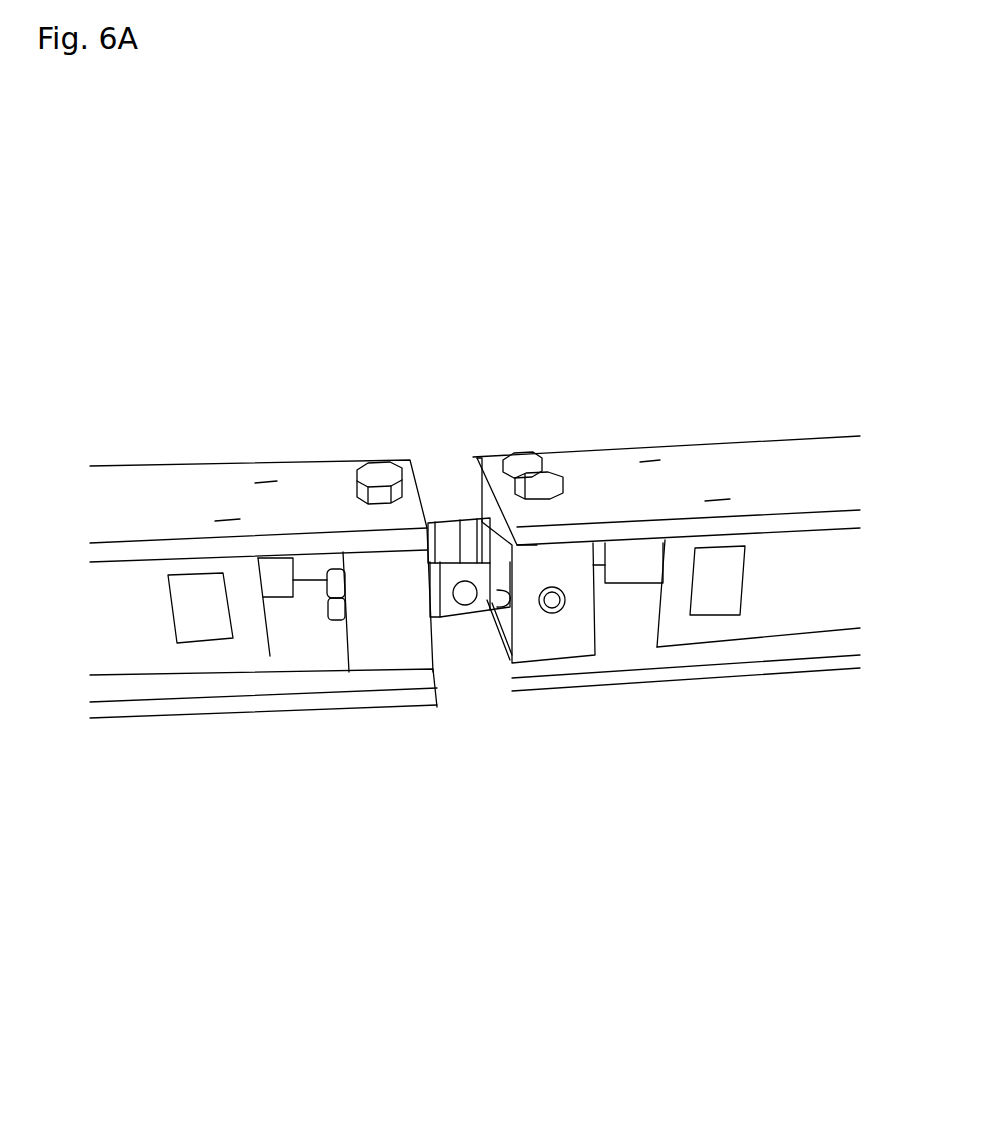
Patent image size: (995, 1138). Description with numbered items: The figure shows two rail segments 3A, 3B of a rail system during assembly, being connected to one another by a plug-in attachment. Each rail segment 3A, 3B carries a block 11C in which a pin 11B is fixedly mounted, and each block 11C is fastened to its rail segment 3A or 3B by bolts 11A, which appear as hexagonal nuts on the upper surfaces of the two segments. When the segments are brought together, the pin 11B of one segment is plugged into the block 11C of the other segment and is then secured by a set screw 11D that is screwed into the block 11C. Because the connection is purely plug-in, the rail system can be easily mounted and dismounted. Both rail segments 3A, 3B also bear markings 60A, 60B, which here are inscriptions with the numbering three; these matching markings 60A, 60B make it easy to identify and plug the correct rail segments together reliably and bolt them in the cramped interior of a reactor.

The rail segment 3A is at (780, 588).
The rail segment 3B is at (122, 595).
The bolt 11A is at (380, 492).
The pin 11B is at (468, 597).
The block 11C is at (388, 612).
The set screw 11D is at (557, 605).
The marking 60A is at (718, 590).
The marking 60B is at (186, 615).